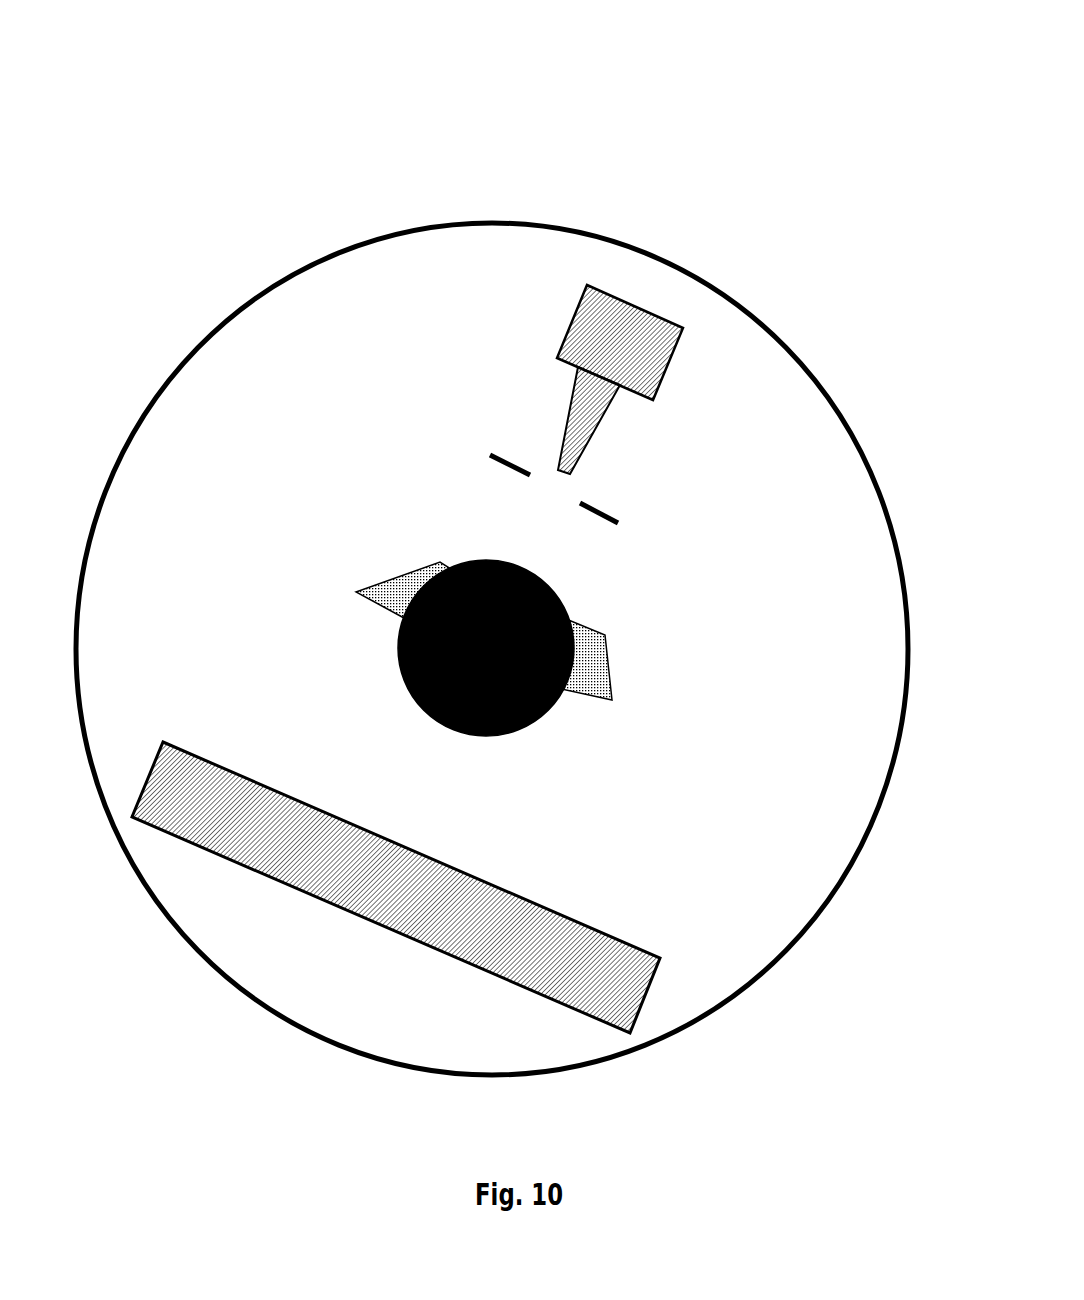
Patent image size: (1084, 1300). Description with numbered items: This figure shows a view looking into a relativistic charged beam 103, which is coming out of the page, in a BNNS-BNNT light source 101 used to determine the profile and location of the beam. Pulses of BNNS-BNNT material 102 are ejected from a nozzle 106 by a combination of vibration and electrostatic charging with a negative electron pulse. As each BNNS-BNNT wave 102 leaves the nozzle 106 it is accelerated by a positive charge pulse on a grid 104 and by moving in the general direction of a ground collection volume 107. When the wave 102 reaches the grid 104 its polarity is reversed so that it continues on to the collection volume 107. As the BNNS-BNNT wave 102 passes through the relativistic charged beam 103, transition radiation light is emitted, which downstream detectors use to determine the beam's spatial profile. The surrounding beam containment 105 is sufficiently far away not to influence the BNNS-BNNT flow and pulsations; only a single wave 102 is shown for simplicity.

The circular housing 101 is at (378, 120).
The BNNS-BNNT wave 102 is at (356, 588).
The relativistic charged beam 103 is at (468, 562).
The grid 104 is at (487, 447).
The beam containment 105 is at (590, 232).
The nozzle 106 is at (617, 410).
The ground collection volume 107 is at (658, 982).